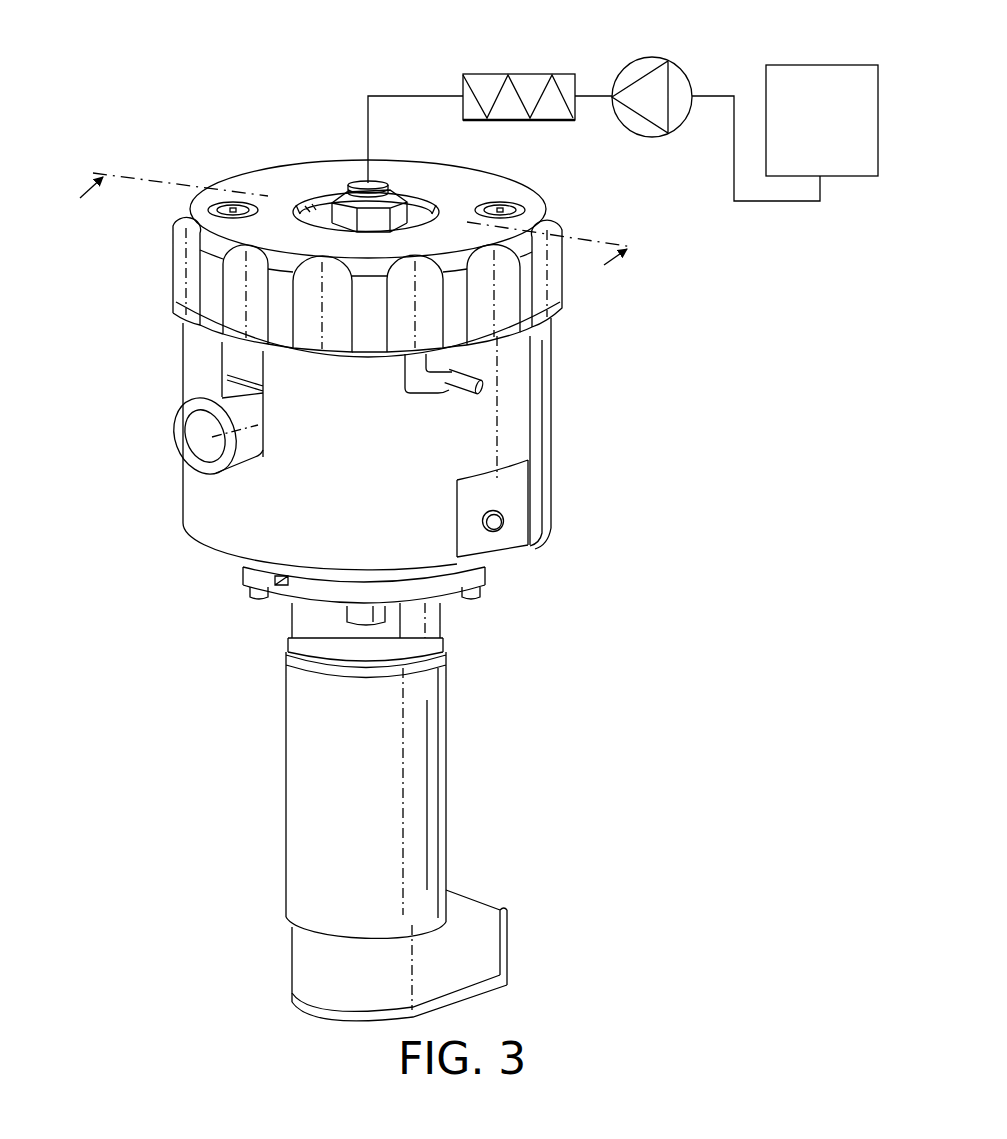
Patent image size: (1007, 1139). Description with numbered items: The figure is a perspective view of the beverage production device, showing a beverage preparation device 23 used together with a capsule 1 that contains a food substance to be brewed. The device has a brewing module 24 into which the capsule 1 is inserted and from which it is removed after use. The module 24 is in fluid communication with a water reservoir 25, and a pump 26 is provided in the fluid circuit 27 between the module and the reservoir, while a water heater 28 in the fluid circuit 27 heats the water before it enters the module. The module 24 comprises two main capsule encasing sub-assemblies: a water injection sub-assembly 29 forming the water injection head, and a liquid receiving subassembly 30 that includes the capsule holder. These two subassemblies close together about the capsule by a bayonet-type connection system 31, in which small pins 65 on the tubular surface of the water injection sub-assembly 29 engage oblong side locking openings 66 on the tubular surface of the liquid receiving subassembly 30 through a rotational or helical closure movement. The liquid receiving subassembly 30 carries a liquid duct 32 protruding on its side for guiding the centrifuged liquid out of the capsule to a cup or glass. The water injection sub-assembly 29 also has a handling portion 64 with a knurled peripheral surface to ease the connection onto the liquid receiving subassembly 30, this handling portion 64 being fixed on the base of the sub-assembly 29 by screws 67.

The capsule 1 is at (151, 579).
The beverage preparation device 23 is at (279, 73).
The module 24 is at (620, 507).
The water reservoir 25 is at (818, 64).
The pump 26 is at (648, 62).
The fluid circuit 27 is at (411, 94).
The water heater 28 is at (516, 73).
The water injection sub-assembly 29 is at (160, 205).
The liquid receiving subassembly 30 is at (572, 312).
The bayonet-type connection system 31 is at (402, 401).
The liquid duct 32 is at (169, 471).
The handling portion 64 is at (567, 288).
The pins 65 is at (482, 394).
The side locking openings 66 is at (428, 396).
The screws 67 is at (509, 205).